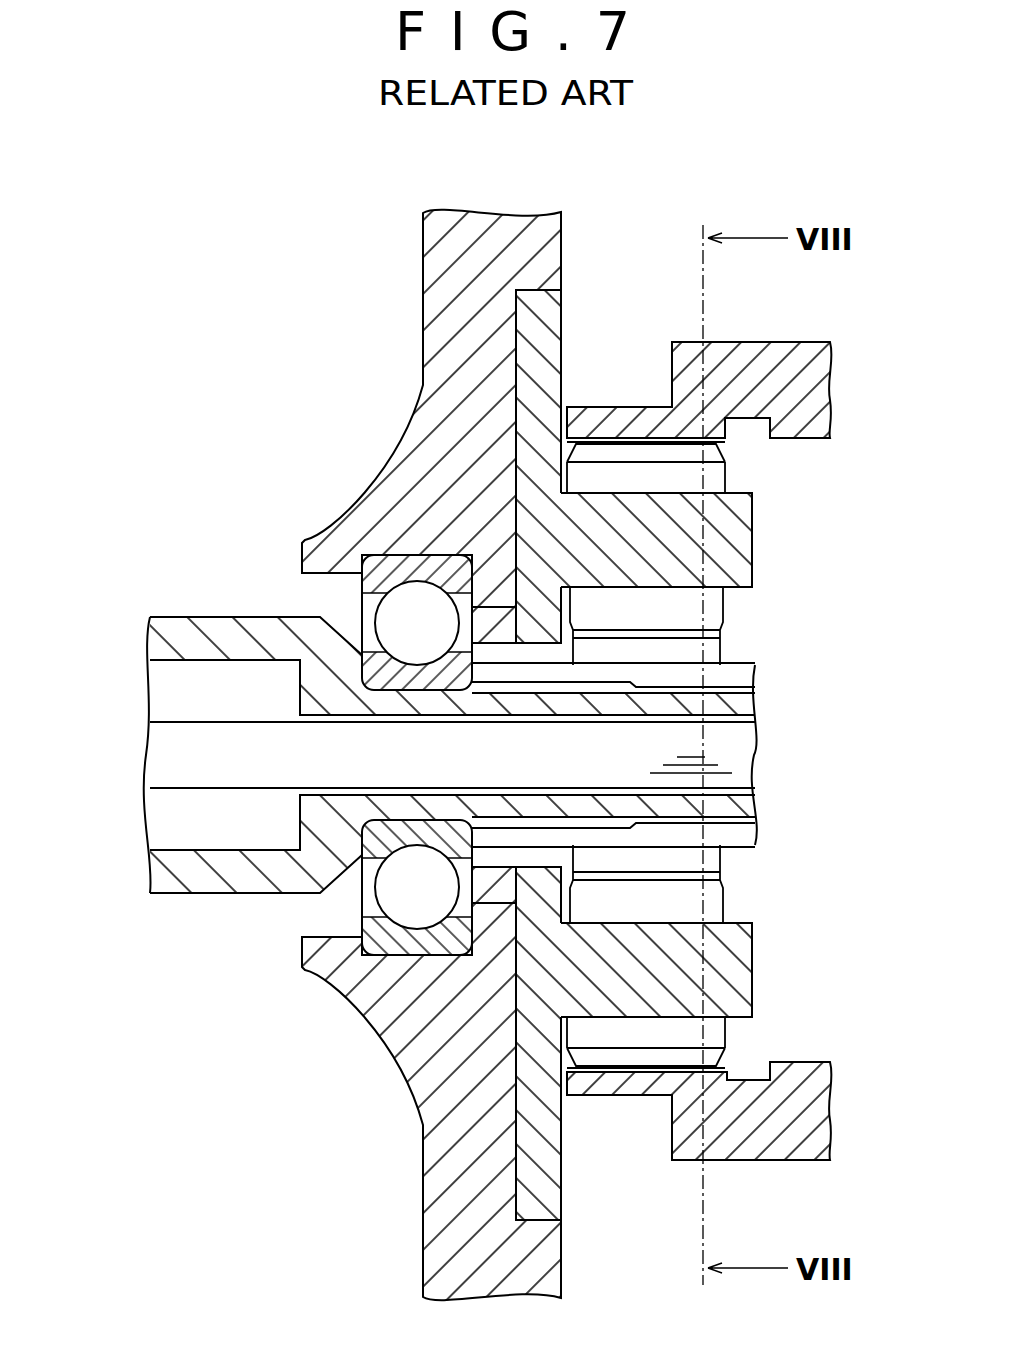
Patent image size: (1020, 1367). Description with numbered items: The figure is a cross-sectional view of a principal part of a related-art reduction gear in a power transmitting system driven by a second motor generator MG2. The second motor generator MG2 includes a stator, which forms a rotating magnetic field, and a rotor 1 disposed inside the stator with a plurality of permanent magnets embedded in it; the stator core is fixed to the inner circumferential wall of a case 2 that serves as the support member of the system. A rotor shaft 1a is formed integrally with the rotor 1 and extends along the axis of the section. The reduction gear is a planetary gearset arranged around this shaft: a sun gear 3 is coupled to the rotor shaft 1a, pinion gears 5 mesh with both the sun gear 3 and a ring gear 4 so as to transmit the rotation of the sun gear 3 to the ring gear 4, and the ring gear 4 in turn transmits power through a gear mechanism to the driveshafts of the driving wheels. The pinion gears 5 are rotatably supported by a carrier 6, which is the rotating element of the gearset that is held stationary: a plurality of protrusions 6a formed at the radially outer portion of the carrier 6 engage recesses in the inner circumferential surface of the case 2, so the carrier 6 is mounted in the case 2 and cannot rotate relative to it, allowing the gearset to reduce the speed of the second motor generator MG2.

The rotor 1 is at (203, 617).
The rotor shaft 1a is at (760, 706).
The case 2 is at (430, 243).
The sun gear 3 is at (712, 654).
The ring gear 4 is at (826, 356).
The pinion gears 5 is at (718, 478).
The carrier 6 is at (577, 1175).
The protrusions 6a is at (549, 322).
The second motor generator MG2 is at (172, 586).